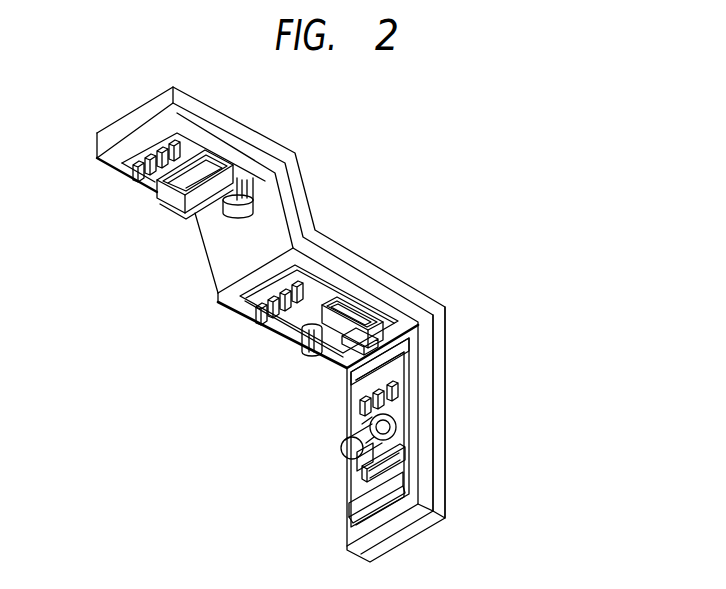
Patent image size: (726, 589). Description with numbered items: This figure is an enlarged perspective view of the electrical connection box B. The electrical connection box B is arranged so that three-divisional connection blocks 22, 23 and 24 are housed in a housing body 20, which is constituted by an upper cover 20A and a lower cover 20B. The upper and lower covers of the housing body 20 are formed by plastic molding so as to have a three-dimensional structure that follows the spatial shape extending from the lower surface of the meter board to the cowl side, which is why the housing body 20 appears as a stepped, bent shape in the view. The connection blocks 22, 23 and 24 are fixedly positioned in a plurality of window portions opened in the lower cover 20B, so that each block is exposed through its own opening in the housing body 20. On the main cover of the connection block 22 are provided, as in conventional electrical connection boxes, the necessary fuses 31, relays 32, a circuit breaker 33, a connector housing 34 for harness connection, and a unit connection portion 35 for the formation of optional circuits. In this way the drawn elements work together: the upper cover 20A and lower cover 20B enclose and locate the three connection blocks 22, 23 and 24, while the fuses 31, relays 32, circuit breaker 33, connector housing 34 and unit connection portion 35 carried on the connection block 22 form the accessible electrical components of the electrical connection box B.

The housing body 20 is at (527, 447).
The upper cover 20A is at (442, 462).
The lower cover 20B is at (428, 473).
The connection block 22 is at (357, 480).
The connection block 23 is at (328, 292).
The connection block 24 is at (213, 150).
The fuses 31 is at (398, 394).
The relays 32 is at (249, 194).
The circuit breaker 33 is at (302, 342).
The connector housing 34 is at (177, 204).
The unit connection portion 35 is at (362, 377).
The electrical connection box B is at (355, 214).